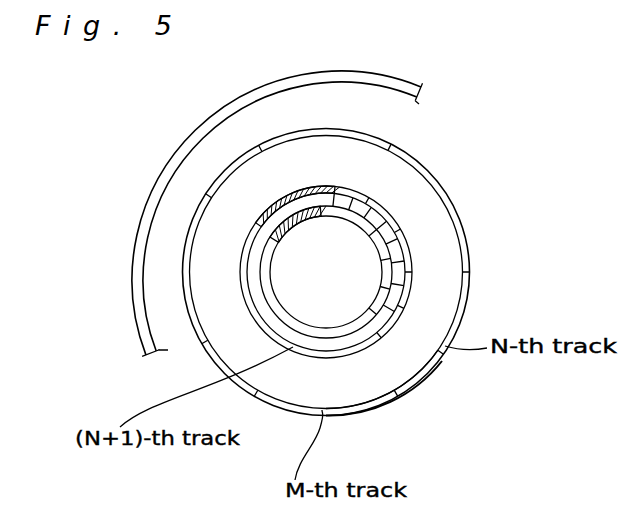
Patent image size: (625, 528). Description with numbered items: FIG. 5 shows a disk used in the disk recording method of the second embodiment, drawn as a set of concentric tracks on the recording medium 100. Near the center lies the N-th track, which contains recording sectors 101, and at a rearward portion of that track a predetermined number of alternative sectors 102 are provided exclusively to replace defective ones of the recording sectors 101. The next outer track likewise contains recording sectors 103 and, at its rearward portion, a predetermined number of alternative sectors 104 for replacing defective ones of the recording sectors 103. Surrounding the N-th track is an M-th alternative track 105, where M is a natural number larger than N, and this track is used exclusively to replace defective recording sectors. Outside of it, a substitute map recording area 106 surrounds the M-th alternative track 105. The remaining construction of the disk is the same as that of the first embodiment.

The recording medium 100 is at (448, 177).
The recording sectors 101 is at (383, 288).
The alternative sectors 102 is at (312, 216).
The recording sectors 103 is at (412, 246).
The alternative sectors 104 is at (292, 181).
The M-th alternative track 105 is at (403, 390).
The substitute map recording area 106 is at (406, 93).